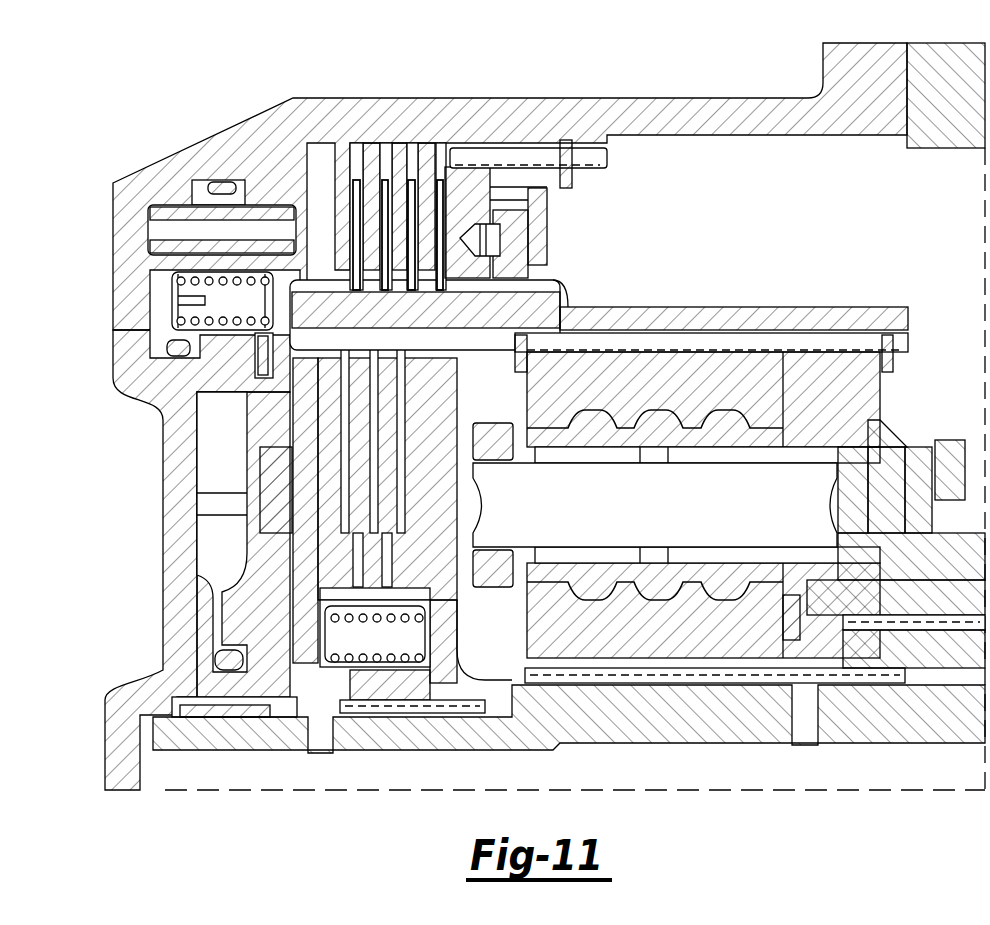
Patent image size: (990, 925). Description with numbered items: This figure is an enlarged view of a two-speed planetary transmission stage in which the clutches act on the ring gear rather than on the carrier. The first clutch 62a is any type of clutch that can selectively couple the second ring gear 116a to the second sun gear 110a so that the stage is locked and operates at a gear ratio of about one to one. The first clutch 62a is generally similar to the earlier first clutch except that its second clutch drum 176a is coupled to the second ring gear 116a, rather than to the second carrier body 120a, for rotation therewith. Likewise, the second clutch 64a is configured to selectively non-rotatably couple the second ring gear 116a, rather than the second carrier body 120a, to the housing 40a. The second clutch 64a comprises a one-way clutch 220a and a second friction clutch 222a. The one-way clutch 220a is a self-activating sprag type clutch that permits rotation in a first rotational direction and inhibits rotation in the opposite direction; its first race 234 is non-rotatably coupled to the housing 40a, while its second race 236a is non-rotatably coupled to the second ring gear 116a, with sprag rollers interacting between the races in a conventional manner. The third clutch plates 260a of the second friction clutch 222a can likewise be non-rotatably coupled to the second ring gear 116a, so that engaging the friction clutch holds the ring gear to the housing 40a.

The housing 40a is at (728, 108).
The second clutch 64a is at (248, 160).
The third clutch plates 260a is at (357, 195).
The first clutch 62a is at (190, 467).
The second clutch drum 176a is at (470, 322).
The second friction clutch 222a is at (376, 130).
The first race 234 is at (472, 190).
The one-way clutch 220a is at (580, 197).
The second race 236a is at (510, 242).
The second ring gear 116a is at (638, 372).
The second sun gear 110a is at (707, 618).
The second carrier body 120a is at (818, 435).